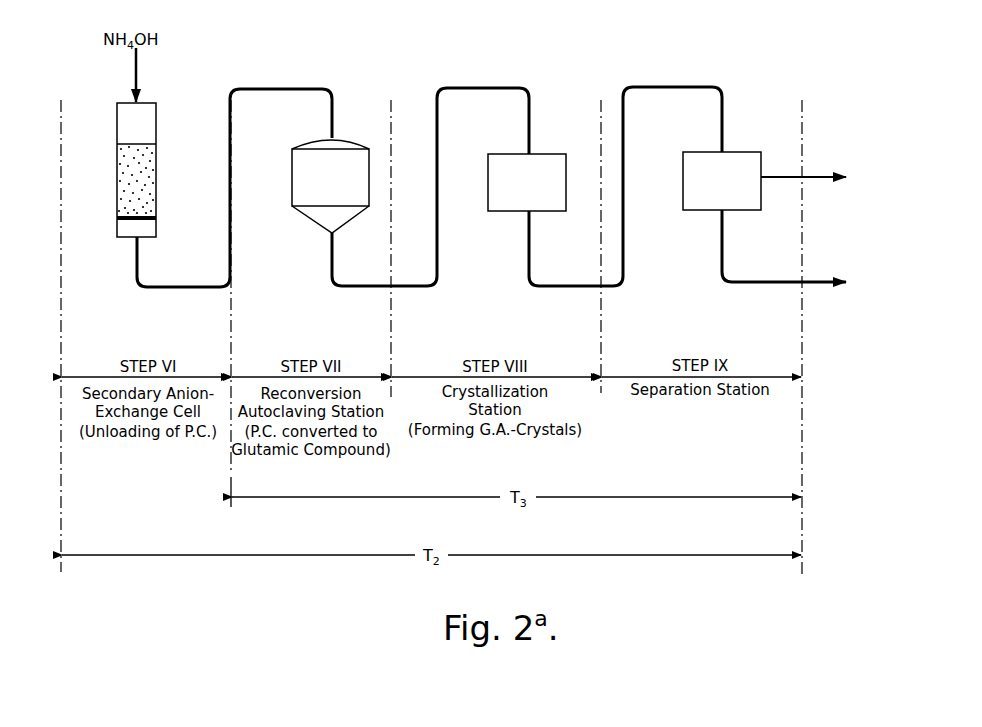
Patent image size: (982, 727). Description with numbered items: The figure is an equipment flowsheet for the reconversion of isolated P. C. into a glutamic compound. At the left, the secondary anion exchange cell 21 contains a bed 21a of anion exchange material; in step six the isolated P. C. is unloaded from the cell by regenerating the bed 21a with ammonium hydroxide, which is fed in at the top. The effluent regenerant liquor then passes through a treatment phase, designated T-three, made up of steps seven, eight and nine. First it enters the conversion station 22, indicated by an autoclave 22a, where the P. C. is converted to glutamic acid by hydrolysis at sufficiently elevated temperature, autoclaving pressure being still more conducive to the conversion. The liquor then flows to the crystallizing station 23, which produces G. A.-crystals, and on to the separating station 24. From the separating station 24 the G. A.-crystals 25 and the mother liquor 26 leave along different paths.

The secondary anion exchange cell 21 is at (156, 128).
The bed of anion exchange material 21a is at (148, 185).
The conversion station 22 is at (345, 138).
The autoclave 22a is at (304, 186).
The crystallizing station 23 is at (543, 152).
The separating station 24 is at (738, 150).
The G. A.-crystals 25 is at (781, 173).
The mother liquor 26 is at (760, 280).